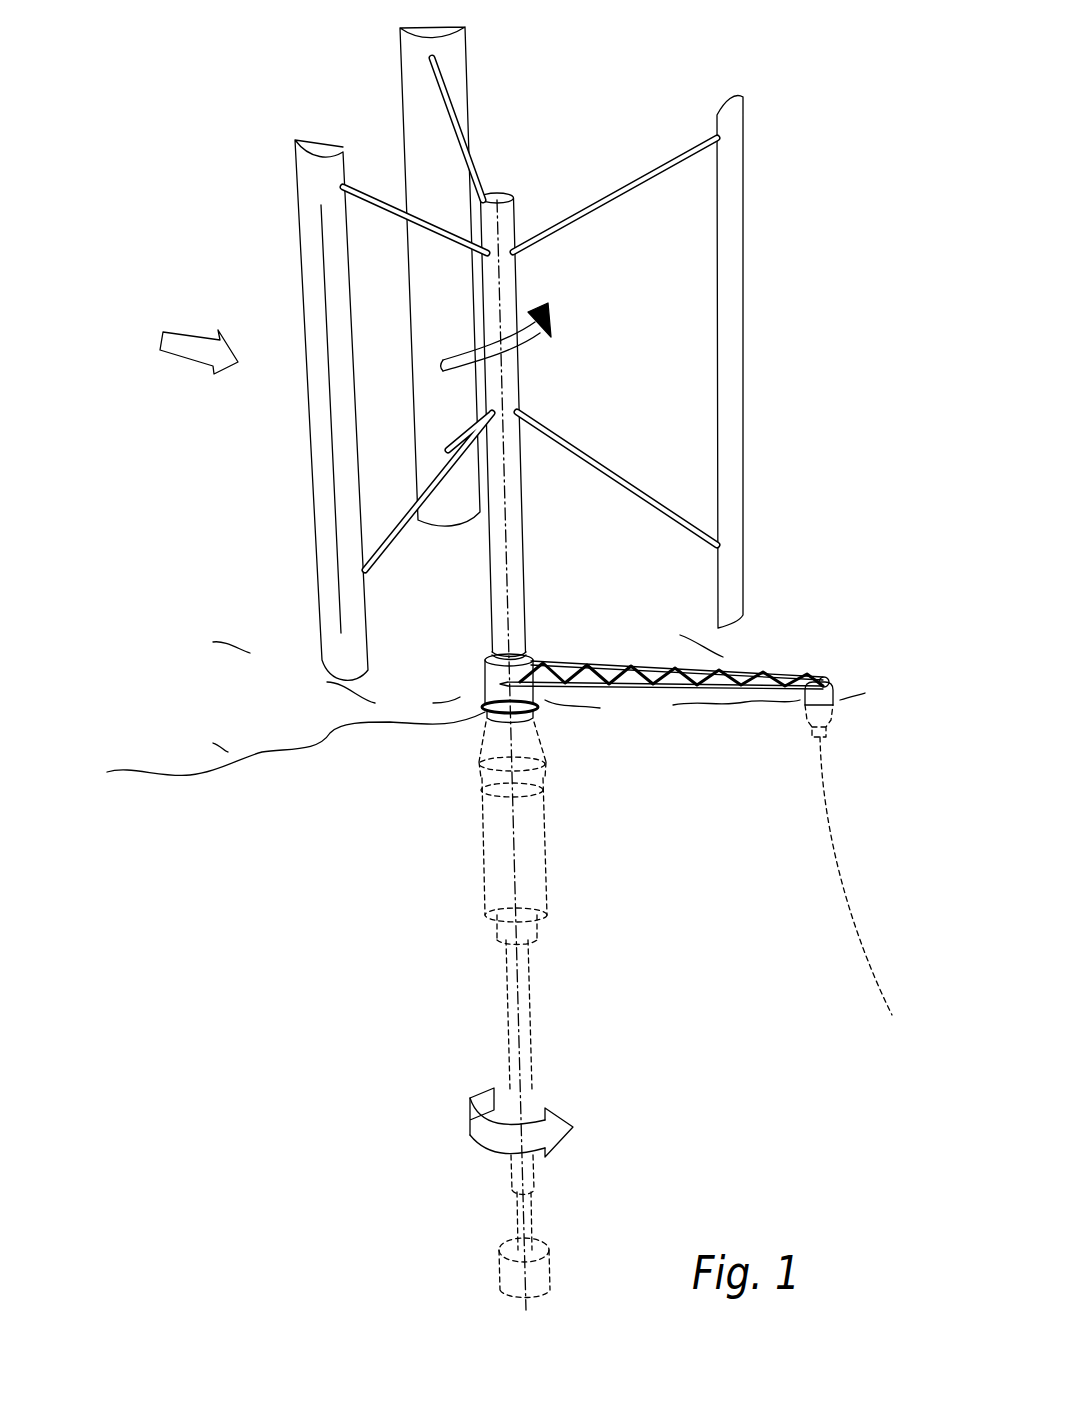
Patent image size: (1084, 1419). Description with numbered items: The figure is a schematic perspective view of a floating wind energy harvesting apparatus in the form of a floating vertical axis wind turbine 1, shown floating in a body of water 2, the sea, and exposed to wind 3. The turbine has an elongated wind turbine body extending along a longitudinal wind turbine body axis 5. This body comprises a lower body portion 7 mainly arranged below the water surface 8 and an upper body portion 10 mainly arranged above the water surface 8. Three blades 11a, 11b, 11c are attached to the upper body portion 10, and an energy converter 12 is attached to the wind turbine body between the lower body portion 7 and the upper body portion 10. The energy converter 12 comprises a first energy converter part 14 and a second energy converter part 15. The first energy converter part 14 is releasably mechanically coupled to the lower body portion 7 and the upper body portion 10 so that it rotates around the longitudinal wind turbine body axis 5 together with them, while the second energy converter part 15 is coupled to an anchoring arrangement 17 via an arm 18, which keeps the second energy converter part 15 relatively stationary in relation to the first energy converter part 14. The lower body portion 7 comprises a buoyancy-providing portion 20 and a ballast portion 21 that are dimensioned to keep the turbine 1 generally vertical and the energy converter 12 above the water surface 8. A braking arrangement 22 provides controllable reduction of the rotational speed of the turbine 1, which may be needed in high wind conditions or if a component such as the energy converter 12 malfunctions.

The floating vertical axis wind turbine 1 is at (244, 623).
The body of water 2 is at (286, 954).
The wind 3 is at (180, 352).
The longitudinal wind turbine body axis 5 is at (503, 273).
The lower body portion 7 is at (540, 1043).
The water surface 8 is at (330, 731).
The upper body portion 10 is at (545, 517).
The blade 11a is at (320, 490).
The blade 11b is at (415, 120).
The blade 11c is at (717, 362).
The energy converter 12 is at (664, 629).
The first energy converter part 14 is at (484, 660).
The second energy converter part 15 is at (528, 695).
The anchoring arrangement 17 is at (811, 653).
The arm 18 is at (568, 634).
The buoyancy-providing portion 20 is at (537, 875).
The ballast portion 21 is at (540, 1272).
The braking arrangement 22 is at (461, 750).